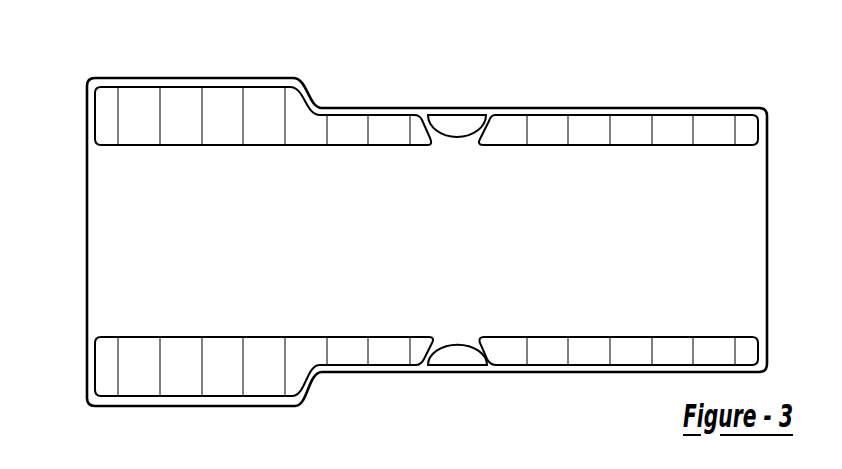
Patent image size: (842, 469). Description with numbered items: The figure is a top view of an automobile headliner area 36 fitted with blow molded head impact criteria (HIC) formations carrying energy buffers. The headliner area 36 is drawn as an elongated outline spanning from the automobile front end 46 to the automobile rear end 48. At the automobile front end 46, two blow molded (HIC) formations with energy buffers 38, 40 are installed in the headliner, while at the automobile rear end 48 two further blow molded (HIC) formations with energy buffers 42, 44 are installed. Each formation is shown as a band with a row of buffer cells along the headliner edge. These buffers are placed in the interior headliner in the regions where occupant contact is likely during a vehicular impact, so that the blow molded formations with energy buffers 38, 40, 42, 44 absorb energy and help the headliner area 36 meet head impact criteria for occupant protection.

The headliner area 36 is at (441, 231).
The blow molded (HIC) formation with energy buffers 38 is at (600, 366).
The blow molded (HIC) formation with energy buffers 40 is at (675, 110).
The blow molded (HIC) formation with energy buffers 42 is at (277, 80).
The blow molded (HIC) formation with energy buffers 44 is at (223, 397).
The automobile front end 46 is at (766, 208).
The automobile rear end 48 is at (88, 250).